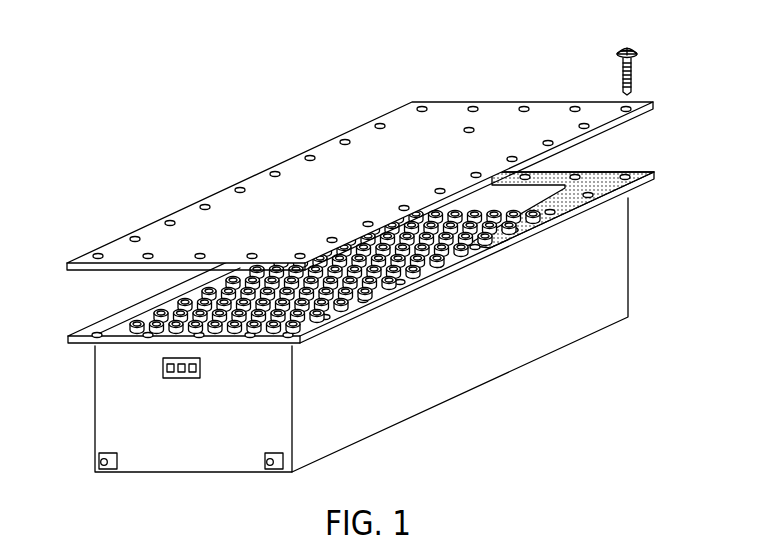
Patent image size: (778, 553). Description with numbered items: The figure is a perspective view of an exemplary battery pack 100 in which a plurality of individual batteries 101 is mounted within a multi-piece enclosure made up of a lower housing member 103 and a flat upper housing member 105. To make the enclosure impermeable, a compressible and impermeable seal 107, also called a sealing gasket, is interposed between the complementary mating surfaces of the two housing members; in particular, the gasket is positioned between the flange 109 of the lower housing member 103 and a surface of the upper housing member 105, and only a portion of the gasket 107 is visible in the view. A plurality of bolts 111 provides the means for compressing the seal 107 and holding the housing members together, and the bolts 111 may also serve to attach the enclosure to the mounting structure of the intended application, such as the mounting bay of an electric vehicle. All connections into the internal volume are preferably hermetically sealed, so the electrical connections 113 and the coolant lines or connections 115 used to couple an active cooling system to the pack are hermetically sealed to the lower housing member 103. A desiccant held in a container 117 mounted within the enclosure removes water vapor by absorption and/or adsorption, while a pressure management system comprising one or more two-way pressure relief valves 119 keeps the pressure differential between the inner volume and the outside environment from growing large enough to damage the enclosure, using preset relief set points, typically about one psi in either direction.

The battery pack 100 is at (249, 127).
The batteries 101 is at (172, 306).
The lower housing member 103 is at (475, 339).
The upper housing member 105 is at (401, 191).
The seal 107 is at (626, 188).
The flange 109 is at (387, 298).
The bolts 111 is at (625, 49).
The electrical connections 113 is at (163, 379).
The coolant lines/connections 115 is at (273, 467).
The container 117 is at (522, 180).
The pressure relief valves 119 is at (469, 125).